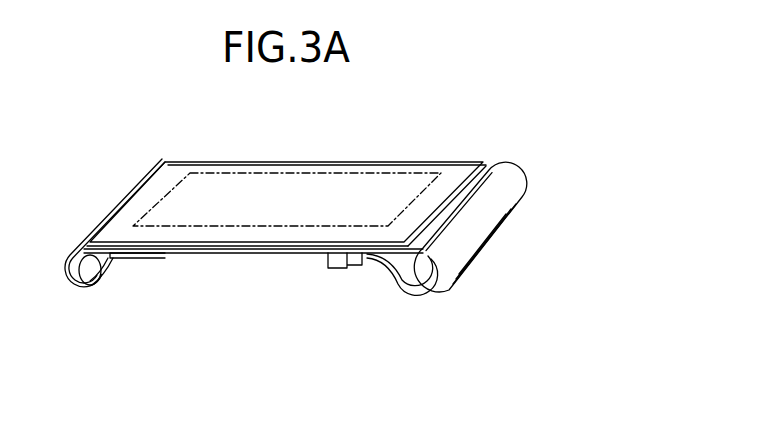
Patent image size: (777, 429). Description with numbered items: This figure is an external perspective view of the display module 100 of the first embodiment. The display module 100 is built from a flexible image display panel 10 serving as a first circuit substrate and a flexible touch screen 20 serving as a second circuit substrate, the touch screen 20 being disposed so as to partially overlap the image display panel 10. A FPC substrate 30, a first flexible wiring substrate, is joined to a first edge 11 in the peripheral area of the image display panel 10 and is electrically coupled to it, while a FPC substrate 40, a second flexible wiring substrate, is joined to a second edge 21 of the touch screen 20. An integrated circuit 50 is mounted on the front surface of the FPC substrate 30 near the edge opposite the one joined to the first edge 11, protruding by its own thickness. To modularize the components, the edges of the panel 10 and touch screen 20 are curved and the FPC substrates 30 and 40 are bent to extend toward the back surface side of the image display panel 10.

The display module 100 is at (570, 114).
The image display panel 10 is at (247, 253).
The first edge 11 is at (424, 262).
The touch screen 20 is at (180, 170).
The second edge 21 is at (96, 263).
The FPC substrate 30 is at (502, 188).
The FPC substrate 40 is at (95, 223).
The integrated circuit (IC) 50 is at (345, 270).